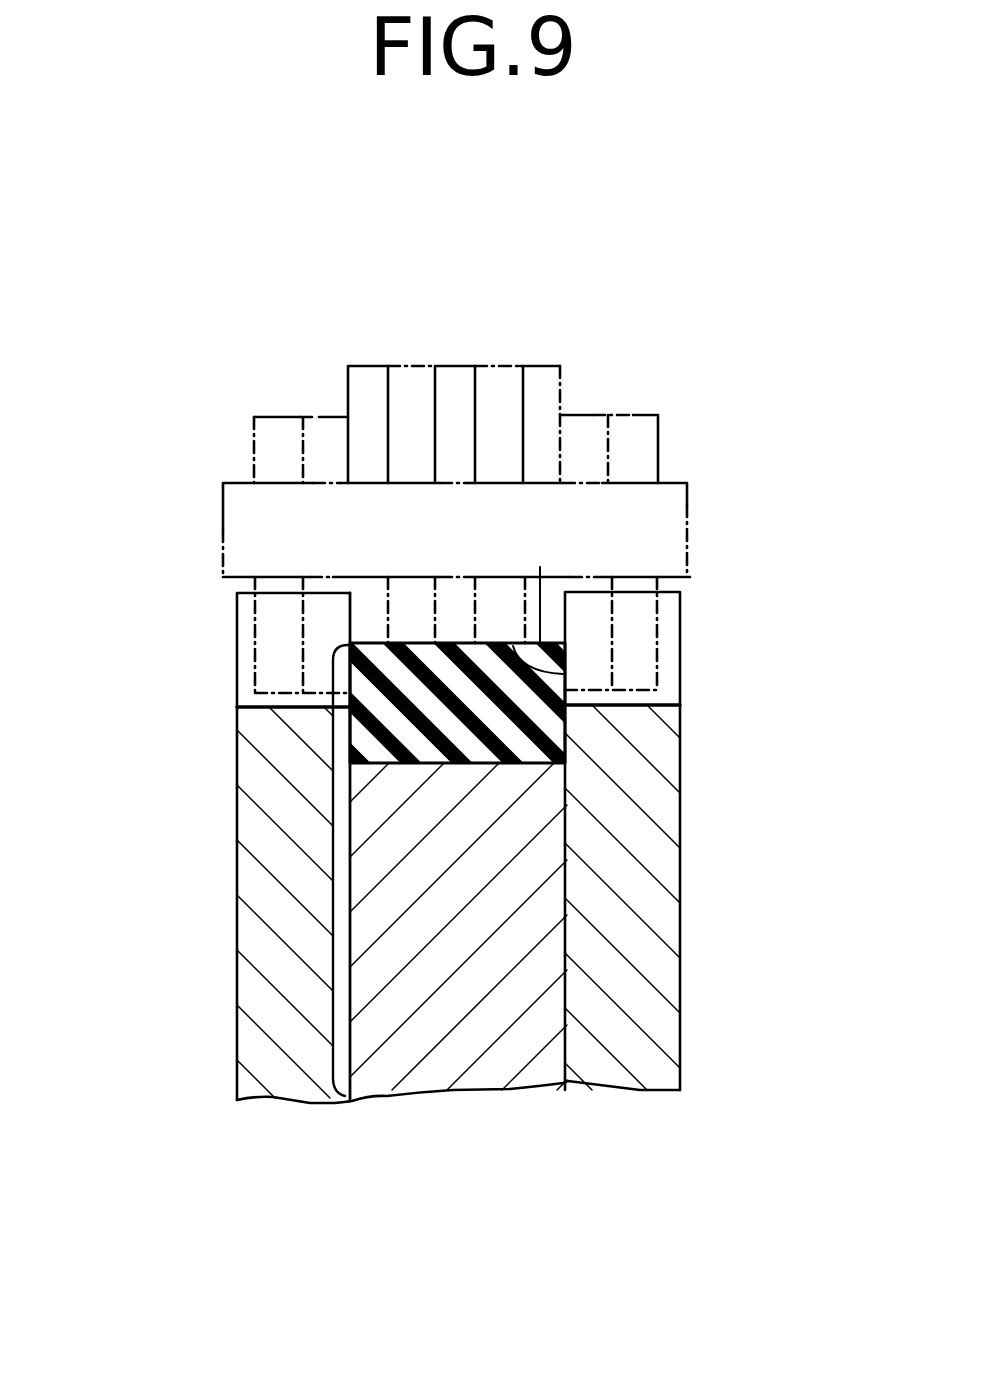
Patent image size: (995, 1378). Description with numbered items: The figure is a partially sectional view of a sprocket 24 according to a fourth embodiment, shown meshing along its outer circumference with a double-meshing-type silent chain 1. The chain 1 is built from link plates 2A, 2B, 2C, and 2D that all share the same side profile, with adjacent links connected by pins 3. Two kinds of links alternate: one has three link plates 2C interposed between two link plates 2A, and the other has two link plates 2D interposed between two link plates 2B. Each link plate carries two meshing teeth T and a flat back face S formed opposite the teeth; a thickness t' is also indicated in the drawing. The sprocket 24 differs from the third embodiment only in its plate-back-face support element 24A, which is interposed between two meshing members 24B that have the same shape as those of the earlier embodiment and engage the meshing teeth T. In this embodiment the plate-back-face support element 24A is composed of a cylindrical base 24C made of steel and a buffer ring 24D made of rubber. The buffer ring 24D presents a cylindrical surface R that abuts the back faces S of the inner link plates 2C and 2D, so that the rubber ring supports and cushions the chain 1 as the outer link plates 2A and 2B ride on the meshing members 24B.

The double-meshing-type silent chain 1 is at (677, 428).
The link plate 2A is at (280, 417).
The link plate 2B is at (323, 417).
The link plate 2C is at (362, 366).
The link plate 2D is at (408, 366).
The pin 3 is at (692, 506).
The cylindrical surface R is at (542, 567).
The flat back face S is at (568, 677).
The meshing teeth T is at (318, 680).
The thickness t' is at (457, 608).
The sprocket 24 is at (702, 842).
The plate-back-face support element 24A is at (333, 833).
The meshing member 24B is at (245, 982).
The cylindrical base 24C is at (490, 1068).
The buffer ring 24D is at (550, 737).